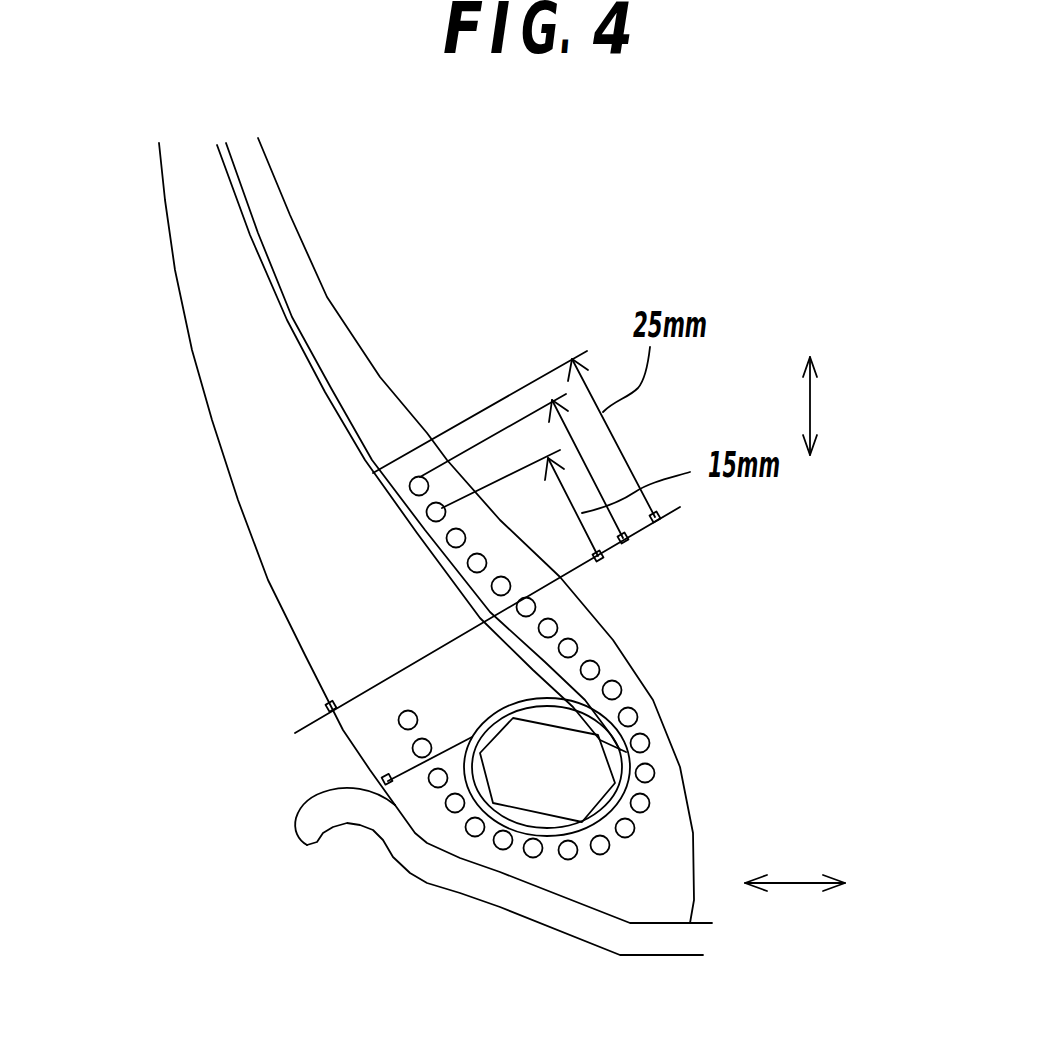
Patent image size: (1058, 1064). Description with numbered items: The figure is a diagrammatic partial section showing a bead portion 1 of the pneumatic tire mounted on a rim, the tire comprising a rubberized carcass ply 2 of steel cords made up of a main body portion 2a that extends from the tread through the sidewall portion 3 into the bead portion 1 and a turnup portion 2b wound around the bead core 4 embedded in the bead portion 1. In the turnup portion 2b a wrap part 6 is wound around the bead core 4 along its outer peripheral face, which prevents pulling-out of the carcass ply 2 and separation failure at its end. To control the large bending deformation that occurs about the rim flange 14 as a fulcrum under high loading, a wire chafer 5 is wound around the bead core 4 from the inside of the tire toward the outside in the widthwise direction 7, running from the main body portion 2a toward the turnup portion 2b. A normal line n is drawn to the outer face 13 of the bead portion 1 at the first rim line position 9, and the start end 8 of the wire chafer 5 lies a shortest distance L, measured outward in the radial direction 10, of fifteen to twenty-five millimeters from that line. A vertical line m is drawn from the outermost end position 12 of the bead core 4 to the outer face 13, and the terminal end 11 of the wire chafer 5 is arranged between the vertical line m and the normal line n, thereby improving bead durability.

The bead portion 1 is at (337, 738).
The carcass ply 2 is at (335, 403).
The main body portion 2a is at (287, 323).
The turnup portion 2b is at (490, 800).
The sidewall portion 3 is at (178, 292).
The bead core 4 is at (575, 775).
The wire chafer 5 is at (595, 667).
The wrap part 6 is at (537, 698).
The widthwise direction 7 is at (797, 883).
The start end of wire chafer 8 is at (414, 477).
The first rim line position 9 is at (323, 708).
The radial direction 10 is at (812, 405).
The terminal end of wire chafer 11 is at (357, 750).
The outermost end position of bead core 12 is at (513, 718).
The outer face of bead portion 13 is at (397, 722).
The rim flange 14 is at (358, 812).
The vertical line m is at (413, 773).
The normal line n is at (387, 678).
The shortest distance L is at (595, 468).